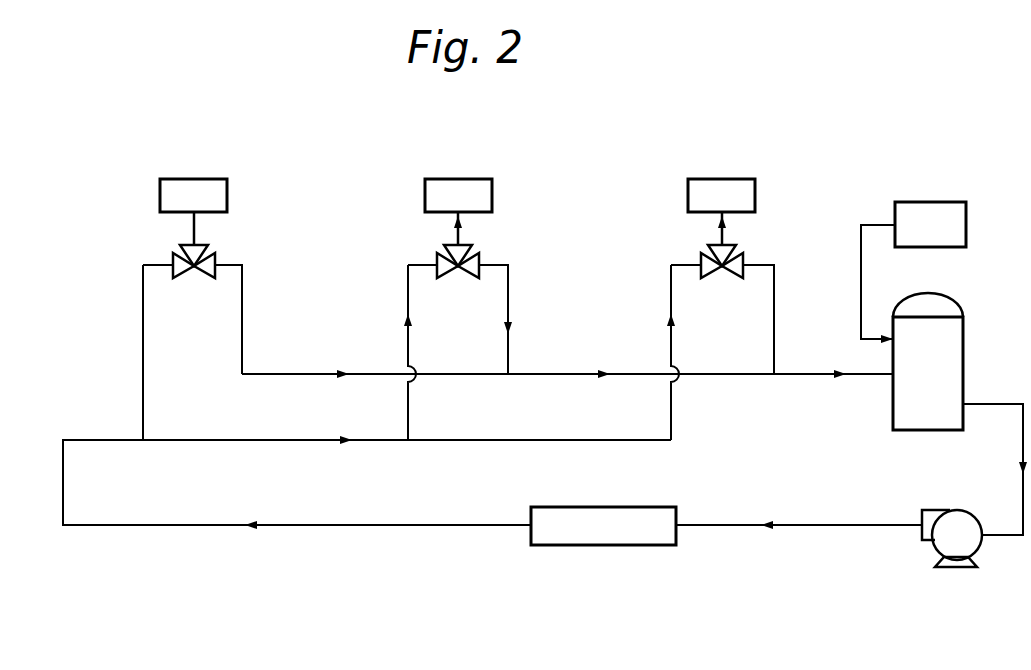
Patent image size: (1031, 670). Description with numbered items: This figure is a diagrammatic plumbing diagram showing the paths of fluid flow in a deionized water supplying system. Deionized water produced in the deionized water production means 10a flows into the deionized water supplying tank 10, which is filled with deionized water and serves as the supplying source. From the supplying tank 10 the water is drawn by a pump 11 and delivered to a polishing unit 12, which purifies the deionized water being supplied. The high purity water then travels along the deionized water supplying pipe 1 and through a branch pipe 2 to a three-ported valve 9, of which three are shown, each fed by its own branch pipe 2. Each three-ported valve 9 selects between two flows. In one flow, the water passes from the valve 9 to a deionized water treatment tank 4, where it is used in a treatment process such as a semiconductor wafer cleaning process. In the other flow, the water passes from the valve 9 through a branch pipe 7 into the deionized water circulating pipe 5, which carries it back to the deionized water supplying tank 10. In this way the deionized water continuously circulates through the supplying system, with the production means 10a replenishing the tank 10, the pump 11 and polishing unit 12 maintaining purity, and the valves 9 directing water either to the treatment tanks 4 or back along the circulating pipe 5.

The deionized water supplying pipe 1 is at (310, 440).
The branch pipe 2 is at (143, 364).
The deionized water treatment tank 4 is at (195, 179).
The deionized water circulating pipe 5 is at (561, 375).
The branch pipe 7 is at (242, 322).
The three-ported valve 9 is at (216, 250).
The deionized water supplying tank 10 is at (963, 362).
The deionized water production means 10a is at (966, 223).
The pump 11 is at (937, 553).
The polishing unit 12 is at (610, 545).